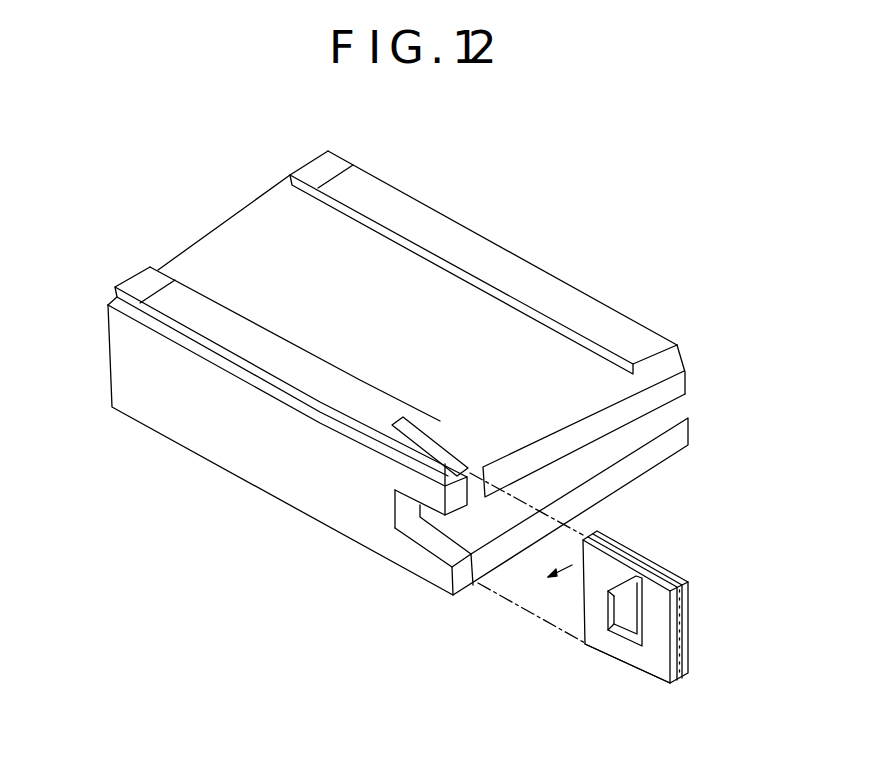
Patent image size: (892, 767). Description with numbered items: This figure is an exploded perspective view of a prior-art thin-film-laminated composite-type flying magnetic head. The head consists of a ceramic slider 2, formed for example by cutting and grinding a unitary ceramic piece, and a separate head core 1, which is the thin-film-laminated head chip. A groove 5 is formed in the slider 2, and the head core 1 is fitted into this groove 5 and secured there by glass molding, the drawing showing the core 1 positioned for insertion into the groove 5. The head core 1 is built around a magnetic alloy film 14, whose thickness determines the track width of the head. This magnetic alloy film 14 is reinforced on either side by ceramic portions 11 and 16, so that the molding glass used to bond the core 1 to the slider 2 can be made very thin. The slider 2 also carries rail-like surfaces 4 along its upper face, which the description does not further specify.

The head core 1 is at (698, 609).
The ceramic slider 2 is at (526, 284).
The guide rail 4 is at (433, 224).
The groove 5 is at (448, 446).
The ceramic portion 11 is at (682, 692).
The magnetic alloy film 14 is at (690, 638).
The ceramic portion 16 is at (692, 673).